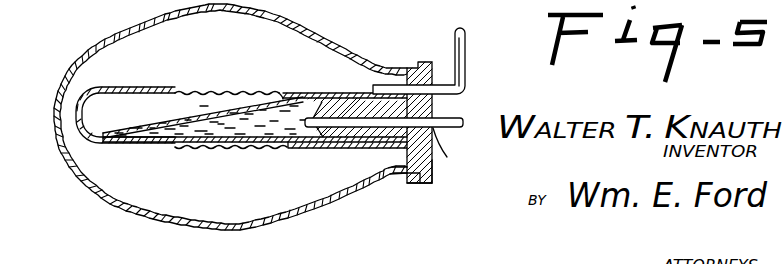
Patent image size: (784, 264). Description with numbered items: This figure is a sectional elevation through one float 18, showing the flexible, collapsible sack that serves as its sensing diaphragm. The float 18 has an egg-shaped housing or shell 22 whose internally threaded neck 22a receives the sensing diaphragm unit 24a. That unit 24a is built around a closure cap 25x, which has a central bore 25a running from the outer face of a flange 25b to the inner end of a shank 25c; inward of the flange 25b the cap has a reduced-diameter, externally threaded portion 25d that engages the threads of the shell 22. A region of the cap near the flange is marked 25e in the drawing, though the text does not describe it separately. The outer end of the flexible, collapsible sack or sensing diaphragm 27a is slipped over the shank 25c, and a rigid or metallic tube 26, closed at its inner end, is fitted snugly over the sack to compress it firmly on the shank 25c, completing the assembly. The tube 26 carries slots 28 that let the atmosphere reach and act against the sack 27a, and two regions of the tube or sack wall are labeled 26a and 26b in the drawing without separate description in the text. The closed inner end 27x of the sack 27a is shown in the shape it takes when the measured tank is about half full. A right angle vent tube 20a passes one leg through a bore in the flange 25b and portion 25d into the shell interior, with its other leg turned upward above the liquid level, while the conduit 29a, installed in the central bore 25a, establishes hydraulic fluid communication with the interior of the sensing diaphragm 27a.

The float 18 is at (62, 62).
The right angle vent tube 20a is at (468, 66).
The egg-shaped housing or shell 22 is at (117, 198).
The internally threaded neck 22a is at (405, 180).
The sensing diaphragm unit 24a is at (444, 112).
The central bore 25a is at (350, 140).
The flange 25b is at (428, 184).
The shank 25c is at (352, 92).
The externally threaded portion 25d is at (413, 180).
The base flange 25e is at (416, 62).
The closure cap 25x is at (434, 162).
The rigid or metallic tube 26 is at (141, 88).
The sleeve end portion 26a is at (273, 94).
The sleeve edge 26b is at (200, 91).
The flexible, collapsible sack or sensing diaphragm 27a is at (221, 114).
The inner end of sensing diaphragm 27x is at (139, 127).
The slots 28 is at (252, 150).
The conduit 29a is at (453, 153).